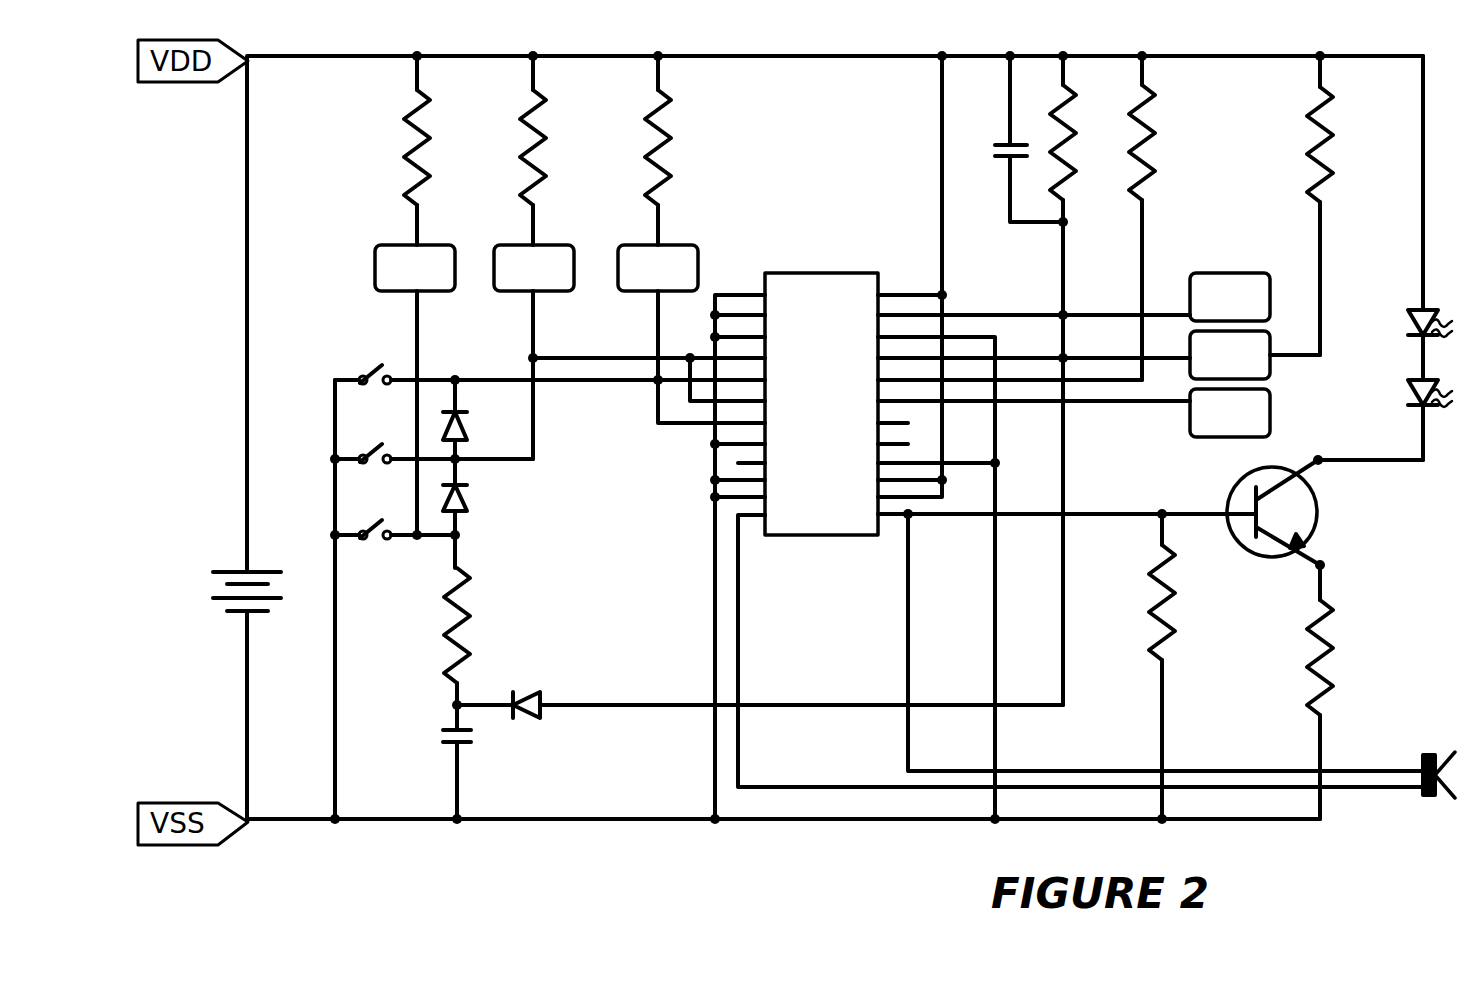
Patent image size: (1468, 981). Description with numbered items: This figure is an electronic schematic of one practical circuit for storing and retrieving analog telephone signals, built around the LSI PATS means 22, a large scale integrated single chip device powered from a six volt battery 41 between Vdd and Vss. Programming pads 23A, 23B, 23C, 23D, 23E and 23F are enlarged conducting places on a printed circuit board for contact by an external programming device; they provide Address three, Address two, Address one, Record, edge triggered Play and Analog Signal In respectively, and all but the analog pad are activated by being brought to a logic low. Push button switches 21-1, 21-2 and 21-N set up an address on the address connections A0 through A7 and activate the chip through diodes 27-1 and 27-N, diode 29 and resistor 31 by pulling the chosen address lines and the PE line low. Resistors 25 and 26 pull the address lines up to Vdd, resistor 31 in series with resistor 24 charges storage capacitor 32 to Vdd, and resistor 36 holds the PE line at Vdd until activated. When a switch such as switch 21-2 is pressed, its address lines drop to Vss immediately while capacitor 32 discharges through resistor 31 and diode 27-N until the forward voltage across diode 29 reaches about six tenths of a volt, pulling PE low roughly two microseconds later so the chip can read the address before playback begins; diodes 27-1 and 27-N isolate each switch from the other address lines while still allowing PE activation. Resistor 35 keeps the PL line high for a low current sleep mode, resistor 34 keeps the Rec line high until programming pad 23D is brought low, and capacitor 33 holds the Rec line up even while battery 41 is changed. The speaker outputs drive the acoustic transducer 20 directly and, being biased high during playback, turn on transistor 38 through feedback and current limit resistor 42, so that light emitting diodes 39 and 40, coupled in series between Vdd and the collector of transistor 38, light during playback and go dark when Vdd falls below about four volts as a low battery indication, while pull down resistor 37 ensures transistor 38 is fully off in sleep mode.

The acoustic transducer 20 is at (1425, 764).
The push button switch 21-1 is at (518, 366).
The push button switch 21-2 is at (402, 444).
The push button switch 21-N is at (362, 521).
The LSI PATS means 22 is at (821, 384).
The programming pad 23A is at (415, 268).
The programming pad 23B is at (534, 268).
The programming pad 23C is at (658, 268).
The programming pad 23D is at (1230, 297).
The programming pad 23E is at (1230, 355).
The programming pad 23F is at (1230, 413).
The resistor 24 is at (394, 150).
The resistor 25 is at (510, 150).
The resistor 26 is at (635, 150).
The diode 27-1 is at (485, 419).
The diode 27-N is at (488, 513).
The diode 29 is at (760, 687).
The resistor 31 is at (432, 636).
The storage capacitor 32 is at (433, 762).
The capacitor 33 is at (1008, 139).
The resistor 34 is at (1078, 380).
The resistor 35 is at (1163, 218).
The resistor 36 is at (1294, 205).
The pull down resistor 37 is at (1139, 666).
The transistor 38 is at (1296, 512).
The light emitting diode 39 is at (1407, 200).
The light emitting diode 40 is at (1407, 397).
The battery 41 is at (225, 437).
The feedback and current limit resistor 42 is at (1295, 692).